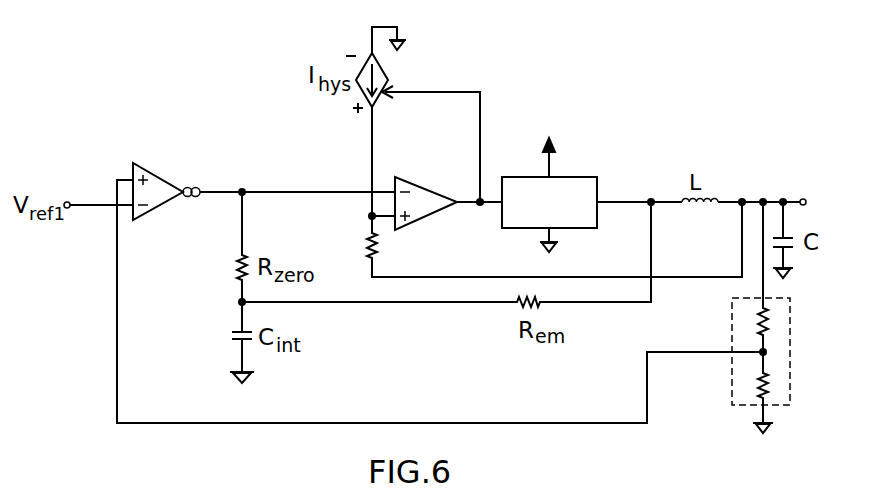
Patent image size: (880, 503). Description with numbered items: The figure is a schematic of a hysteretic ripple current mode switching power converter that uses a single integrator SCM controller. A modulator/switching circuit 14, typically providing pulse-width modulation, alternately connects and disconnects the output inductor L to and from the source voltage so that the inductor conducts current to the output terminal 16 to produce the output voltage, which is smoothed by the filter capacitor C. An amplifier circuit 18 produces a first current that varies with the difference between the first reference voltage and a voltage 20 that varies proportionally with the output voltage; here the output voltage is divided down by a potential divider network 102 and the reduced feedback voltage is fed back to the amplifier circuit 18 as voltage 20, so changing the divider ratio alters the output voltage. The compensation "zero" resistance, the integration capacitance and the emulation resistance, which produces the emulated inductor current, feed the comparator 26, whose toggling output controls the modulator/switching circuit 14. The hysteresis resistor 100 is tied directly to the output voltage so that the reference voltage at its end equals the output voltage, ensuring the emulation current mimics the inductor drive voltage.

The modulator/switching circuit 14 is at (573, 177).
The output terminal 16 is at (802, 198).
The amplifier circuit 18 is at (169, 200).
The voltage 20 is at (117, 182).
The comparator 26 is at (428, 216).
The hysteresis resistor 100 is at (355, 248).
The feedback voltage divider 102 is at (792, 346).